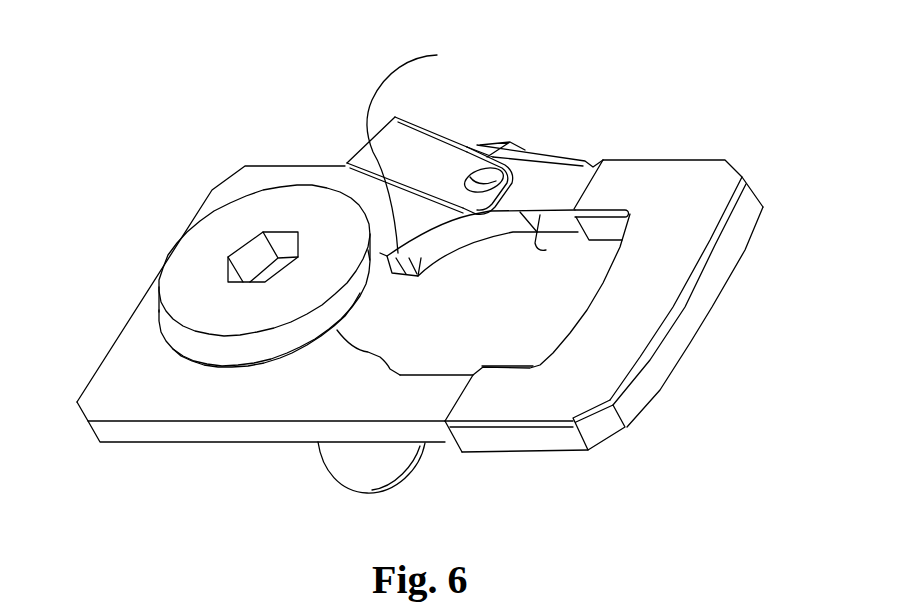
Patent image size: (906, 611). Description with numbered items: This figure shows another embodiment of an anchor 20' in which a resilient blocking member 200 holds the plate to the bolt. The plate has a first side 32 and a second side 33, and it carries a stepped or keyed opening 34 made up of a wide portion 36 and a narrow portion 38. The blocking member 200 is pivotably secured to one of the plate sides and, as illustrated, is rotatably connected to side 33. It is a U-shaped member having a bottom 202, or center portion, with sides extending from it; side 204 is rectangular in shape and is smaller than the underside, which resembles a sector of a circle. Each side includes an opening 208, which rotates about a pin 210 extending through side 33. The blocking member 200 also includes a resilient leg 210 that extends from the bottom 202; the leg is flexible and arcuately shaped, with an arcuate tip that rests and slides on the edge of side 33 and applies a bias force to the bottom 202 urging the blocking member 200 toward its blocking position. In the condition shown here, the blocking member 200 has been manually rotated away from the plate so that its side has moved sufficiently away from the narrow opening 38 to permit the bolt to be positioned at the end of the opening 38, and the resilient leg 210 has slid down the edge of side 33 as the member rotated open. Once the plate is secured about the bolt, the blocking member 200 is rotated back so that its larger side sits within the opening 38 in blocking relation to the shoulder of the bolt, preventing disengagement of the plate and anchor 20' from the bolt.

The anchor 20' is at (211, 251).
The first side 32 is at (405, 213).
The second side 33 is at (217, 430).
The stepped or keyed opening 34 is at (440, 318).
The wide portion 36 is at (575, 207).
The narrow portion 38 is at (349, 168).
The resilient blocking member 200 is at (418, 115).
The bottom 202 is at (443, 132).
The side 204 is at (430, 127).
The opening 208 is at (524, 141).
The pin 210 is at (538, 240).